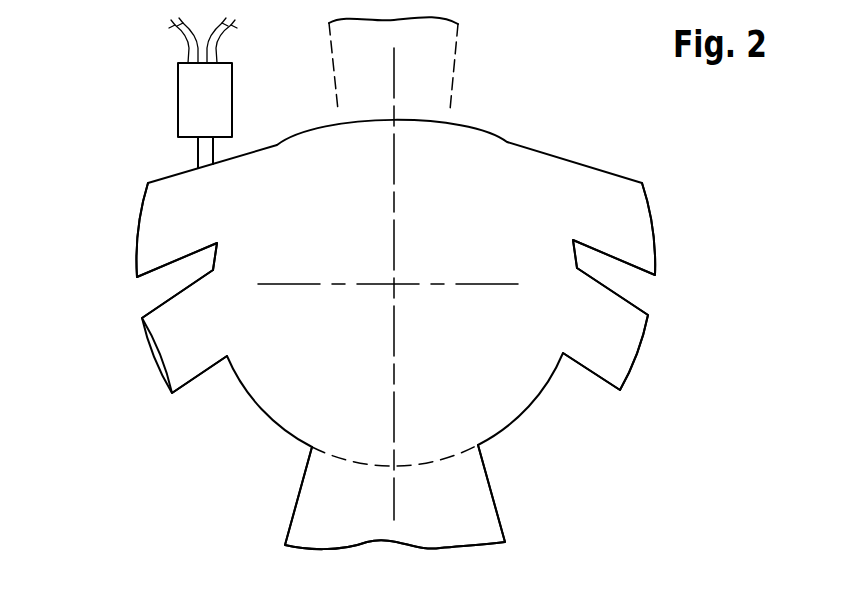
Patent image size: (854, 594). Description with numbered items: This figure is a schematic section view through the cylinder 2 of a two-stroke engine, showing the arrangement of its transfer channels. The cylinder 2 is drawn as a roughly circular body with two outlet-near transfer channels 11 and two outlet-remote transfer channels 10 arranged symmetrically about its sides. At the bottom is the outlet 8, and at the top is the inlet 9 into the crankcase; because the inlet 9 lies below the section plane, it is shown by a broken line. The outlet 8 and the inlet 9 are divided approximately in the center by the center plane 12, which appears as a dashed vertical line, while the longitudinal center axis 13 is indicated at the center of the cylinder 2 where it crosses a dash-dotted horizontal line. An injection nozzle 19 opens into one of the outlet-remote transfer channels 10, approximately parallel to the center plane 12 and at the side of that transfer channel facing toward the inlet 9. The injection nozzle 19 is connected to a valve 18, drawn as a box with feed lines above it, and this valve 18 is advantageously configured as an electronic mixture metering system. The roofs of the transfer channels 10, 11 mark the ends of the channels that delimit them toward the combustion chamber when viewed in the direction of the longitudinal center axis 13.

The cylinder 2 is at (530, 407).
The outlet 8 is at (315, 510).
The inlet 9 is at (435, 53).
The outlet-remote transfer channels 10 is at (633, 232).
The outlet-near transfer channels 11 is at (623, 345).
The center plane 12 is at (394, 192).
The longitudinal center axis 13 is at (394, 284).
The valve 18 is at (195, 98).
The injection nozzle 19 is at (202, 155).